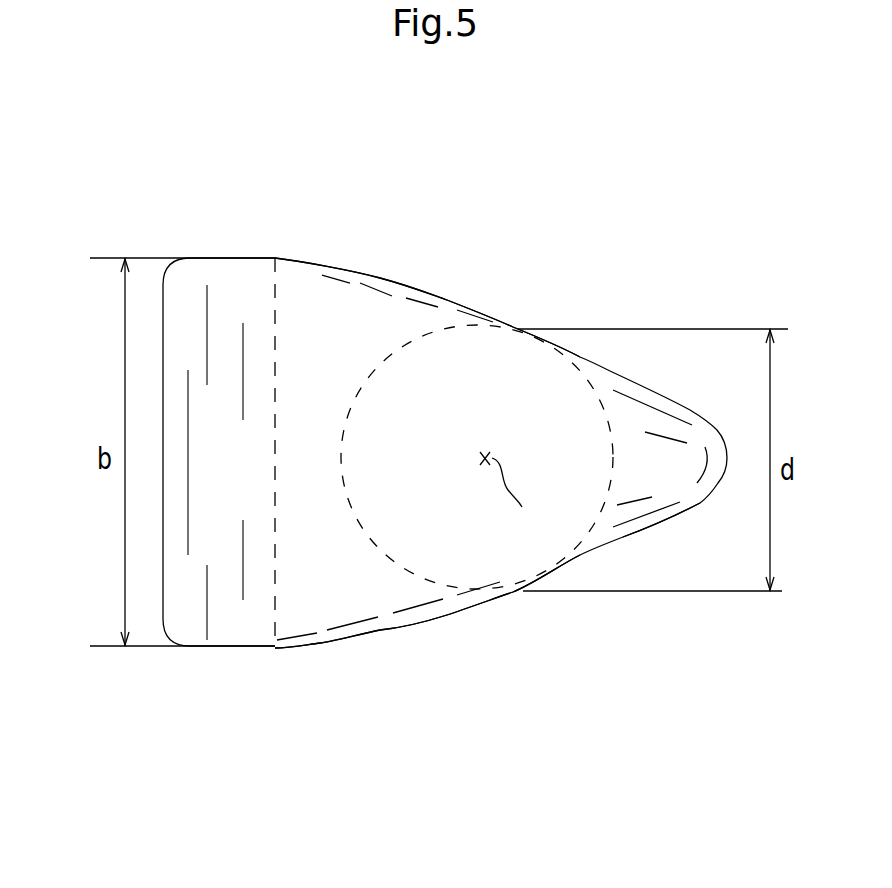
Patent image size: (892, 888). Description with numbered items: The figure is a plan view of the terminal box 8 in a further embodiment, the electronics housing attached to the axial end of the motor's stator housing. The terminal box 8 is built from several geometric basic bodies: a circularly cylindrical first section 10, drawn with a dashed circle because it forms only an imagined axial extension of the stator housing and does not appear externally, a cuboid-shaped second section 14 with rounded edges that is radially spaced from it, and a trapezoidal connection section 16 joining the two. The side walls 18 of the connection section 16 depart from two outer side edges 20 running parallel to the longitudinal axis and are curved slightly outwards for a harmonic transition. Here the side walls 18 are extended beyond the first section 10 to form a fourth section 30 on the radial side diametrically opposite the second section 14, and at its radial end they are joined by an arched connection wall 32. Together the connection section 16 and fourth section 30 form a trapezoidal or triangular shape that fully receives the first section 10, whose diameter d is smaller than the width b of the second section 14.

The terminal box 8 is at (452, 635).
The first section 10 is at (440, 480).
The second section 14 is at (238, 476).
The connection section 16 is at (332, 368).
The side walls 18 is at (383, 277).
The outer side edges 20 is at (283, 260).
The fourth section 30 is at (672, 486).
The arched connection wall 32 is at (718, 497).